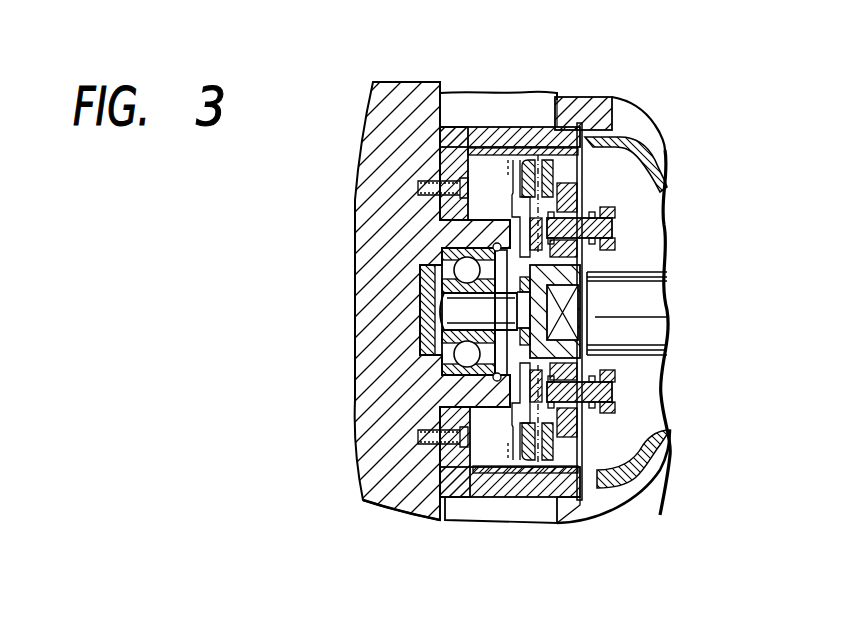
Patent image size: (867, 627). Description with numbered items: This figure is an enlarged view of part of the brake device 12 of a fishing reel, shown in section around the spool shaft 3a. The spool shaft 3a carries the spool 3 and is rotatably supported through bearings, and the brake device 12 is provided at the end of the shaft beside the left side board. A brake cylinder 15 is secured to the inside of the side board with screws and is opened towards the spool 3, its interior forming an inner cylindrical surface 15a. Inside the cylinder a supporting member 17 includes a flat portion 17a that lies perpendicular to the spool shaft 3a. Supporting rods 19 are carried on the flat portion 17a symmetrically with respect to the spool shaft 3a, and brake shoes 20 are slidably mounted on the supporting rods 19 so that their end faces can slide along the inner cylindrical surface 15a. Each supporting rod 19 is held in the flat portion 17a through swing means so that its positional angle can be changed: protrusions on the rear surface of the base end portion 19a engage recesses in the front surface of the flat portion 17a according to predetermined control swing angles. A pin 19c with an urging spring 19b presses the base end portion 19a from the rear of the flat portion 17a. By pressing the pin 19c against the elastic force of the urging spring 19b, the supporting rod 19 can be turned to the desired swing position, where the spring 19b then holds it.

The spool 3 is at (679, 430).
The spool shaft 3a is at (650, 305).
The brake device 12 is at (665, 130).
The brake cylinder 15 is at (497, 132).
The inner cylindrical surface 15a is at (505, 462).
The supporting member 17 is at (580, 357).
The flat portion 17a is at (590, 183).
The supporting rod 19 is at (513, 230).
The base end portion 19a is at (580, 263).
The urging spring 19b is at (577, 203).
The pin 19c is at (612, 228).
The brake shoe 20 is at (565, 98).